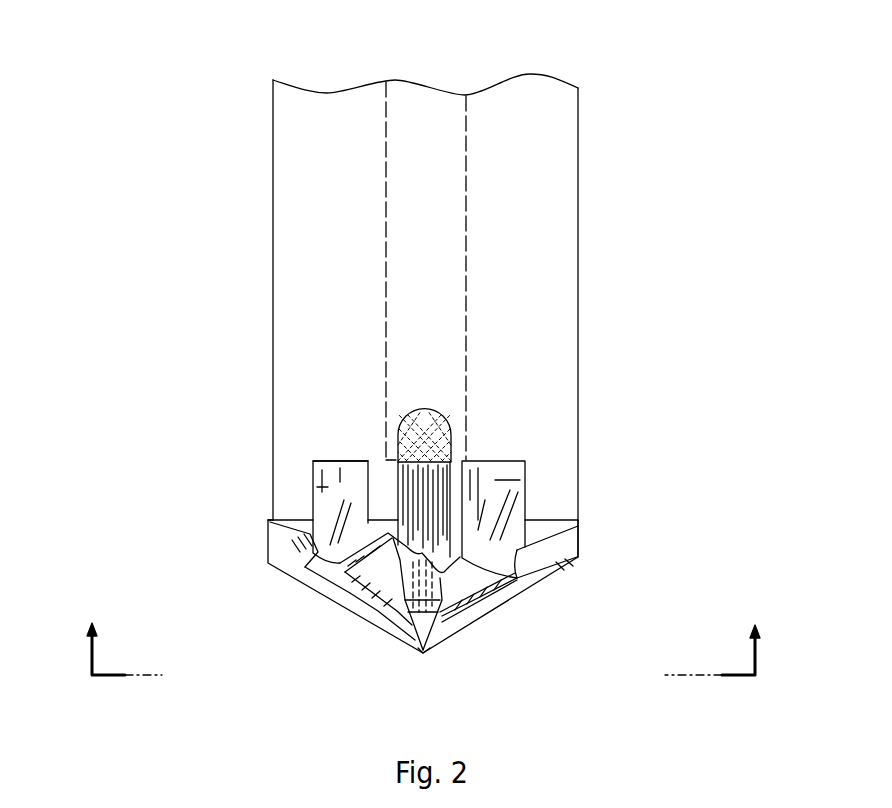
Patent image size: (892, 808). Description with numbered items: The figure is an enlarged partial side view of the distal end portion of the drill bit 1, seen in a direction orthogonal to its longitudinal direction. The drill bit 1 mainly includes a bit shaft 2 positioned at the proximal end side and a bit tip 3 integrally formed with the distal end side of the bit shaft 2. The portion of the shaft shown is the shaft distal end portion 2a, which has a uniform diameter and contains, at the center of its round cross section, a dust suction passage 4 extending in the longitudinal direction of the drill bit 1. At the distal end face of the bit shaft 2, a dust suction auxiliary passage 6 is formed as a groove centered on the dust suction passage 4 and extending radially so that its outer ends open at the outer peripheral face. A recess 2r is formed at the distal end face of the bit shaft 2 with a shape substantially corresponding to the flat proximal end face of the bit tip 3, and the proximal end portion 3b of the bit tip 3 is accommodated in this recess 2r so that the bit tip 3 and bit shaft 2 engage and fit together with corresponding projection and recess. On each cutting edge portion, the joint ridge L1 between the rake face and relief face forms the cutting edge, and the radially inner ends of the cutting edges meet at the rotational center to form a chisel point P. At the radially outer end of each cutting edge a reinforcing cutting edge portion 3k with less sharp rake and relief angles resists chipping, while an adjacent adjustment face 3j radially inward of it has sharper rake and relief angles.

The drill bit 1 is at (605, 141).
The bit shaft 2 is at (567, 251).
The shaft distal end portion 2a is at (273, 160).
The recess 2r is at (357, 461).
The bit tip 3 is at (562, 537).
The proximal end portion 3b is at (322, 477).
The adjustment face 3j is at (308, 570).
The reinforcing cutting edge portion 3k is at (292, 558).
The dust suction passage 4 is at (453, 328).
The dust suction auxiliary passage 6 is at (437, 432).
The joint ridge L1 is at (345, 592).
The chisel point P is at (424, 655).